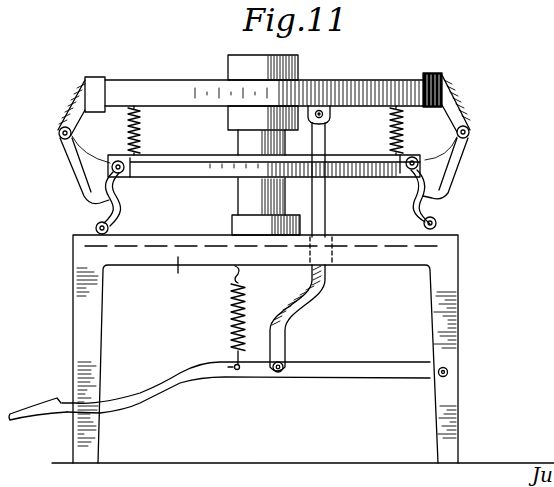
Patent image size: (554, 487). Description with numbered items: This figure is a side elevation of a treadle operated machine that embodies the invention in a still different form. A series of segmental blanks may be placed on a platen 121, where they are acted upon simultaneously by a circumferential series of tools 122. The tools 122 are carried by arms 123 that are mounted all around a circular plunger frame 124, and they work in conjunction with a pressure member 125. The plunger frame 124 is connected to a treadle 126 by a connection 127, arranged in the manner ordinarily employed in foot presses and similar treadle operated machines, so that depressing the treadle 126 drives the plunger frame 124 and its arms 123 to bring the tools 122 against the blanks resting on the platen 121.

The platen 121 is at (125, 237).
The tools 122 is at (83, 218).
The arms 123 is at (80, 166).
The circular plunger frame 124 is at (115, 92).
The pressure member 125 is at (153, 157).
The treadle 126 is at (303, 368).
The connection 127 is at (310, 297).